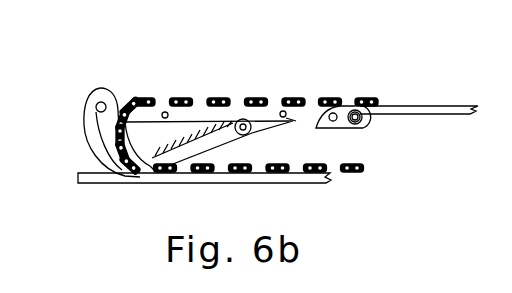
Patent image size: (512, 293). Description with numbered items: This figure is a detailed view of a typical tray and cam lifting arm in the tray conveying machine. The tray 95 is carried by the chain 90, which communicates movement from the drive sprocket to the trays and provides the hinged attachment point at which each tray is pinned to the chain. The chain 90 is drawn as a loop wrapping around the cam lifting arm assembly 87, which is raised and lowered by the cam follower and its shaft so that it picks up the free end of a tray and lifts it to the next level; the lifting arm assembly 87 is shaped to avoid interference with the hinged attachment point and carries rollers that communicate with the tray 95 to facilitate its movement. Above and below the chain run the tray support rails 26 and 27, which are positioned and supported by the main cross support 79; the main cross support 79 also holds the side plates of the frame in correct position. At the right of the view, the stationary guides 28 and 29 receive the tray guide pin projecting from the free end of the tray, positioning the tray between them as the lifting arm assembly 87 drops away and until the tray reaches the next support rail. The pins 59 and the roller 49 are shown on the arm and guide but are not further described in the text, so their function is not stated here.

The tray support rail 26 is at (457, 110).
The tray support rail 27 is at (250, 177).
The stationary guide 28 is at (290, 118).
The stationary guide 29 is at (325, 126).
The roller 49 is at (338, 113).
The pins 59 is at (163, 118).
The main cross support 79 is at (362, 120).
The cam lifting arm assembly 87 is at (98, 120).
The chain 90 is at (360, 171).
The tray 95 is at (313, 105).